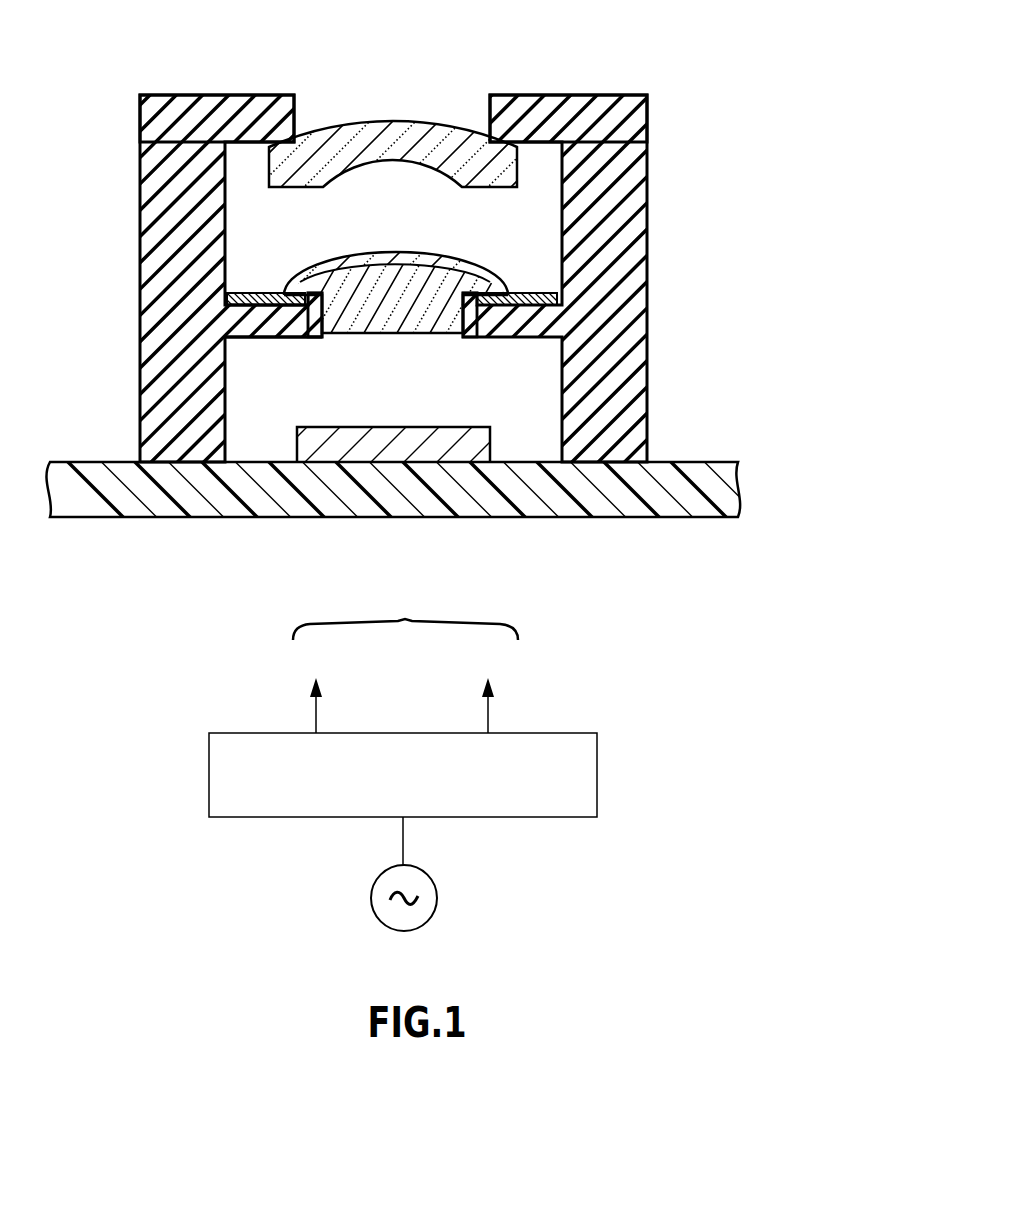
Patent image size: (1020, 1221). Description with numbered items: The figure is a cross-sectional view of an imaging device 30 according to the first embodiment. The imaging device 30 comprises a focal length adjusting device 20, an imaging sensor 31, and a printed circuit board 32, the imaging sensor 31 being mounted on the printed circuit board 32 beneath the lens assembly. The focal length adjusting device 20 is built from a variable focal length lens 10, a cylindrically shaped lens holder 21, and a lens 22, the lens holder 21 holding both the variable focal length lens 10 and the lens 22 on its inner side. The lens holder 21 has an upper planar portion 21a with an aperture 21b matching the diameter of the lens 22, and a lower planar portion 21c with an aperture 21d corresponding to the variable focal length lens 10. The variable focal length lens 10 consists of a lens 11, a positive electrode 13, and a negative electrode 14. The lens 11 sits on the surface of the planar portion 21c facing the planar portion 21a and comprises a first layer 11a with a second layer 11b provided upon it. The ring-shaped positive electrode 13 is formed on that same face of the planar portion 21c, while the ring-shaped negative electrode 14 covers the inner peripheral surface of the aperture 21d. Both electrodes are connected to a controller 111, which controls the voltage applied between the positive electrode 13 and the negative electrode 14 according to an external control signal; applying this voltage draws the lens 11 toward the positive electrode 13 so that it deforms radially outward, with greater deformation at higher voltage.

The variable focal length lens 10 is at (748, 145).
The lens 11 is at (374, 227).
The first layer 11a is at (481, 277).
The second layer 11b is at (442, 263).
The positive electrode 13 is at (522, 294).
The negative electrode 14 is at (477, 324).
The focal length adjusting device 20 is at (790, 95).
The lens holder 21 is at (510, 269).
The planar portion 21a is at (253, 102).
The aperture 21b is at (490, 124).
The planar portion 21c is at (252, 330).
The aperture 21d is at (312, 300).
The lens 22 is at (373, 130).
The imaging device 30 is at (835, 95).
The imaging sensor 31 is at (337, 450).
The printed circuit board 32 is at (173, 503).
The controller 111 is at (209, 770).